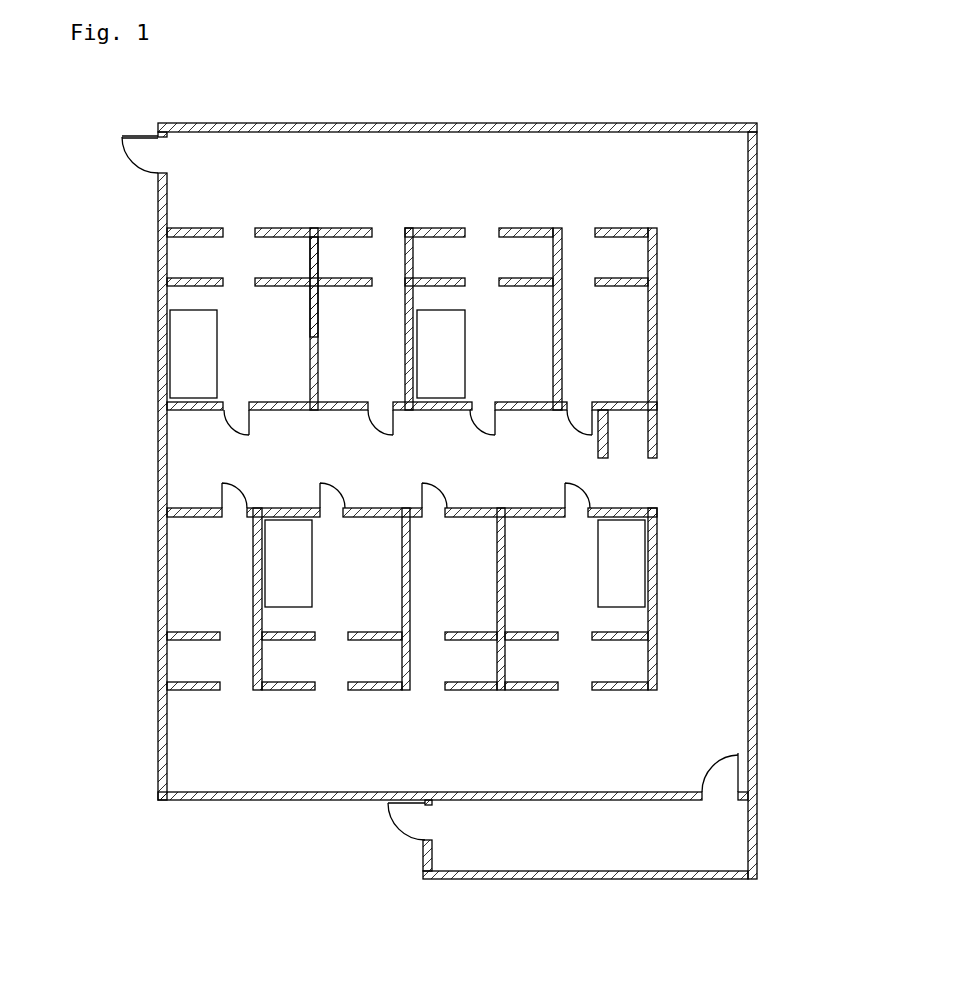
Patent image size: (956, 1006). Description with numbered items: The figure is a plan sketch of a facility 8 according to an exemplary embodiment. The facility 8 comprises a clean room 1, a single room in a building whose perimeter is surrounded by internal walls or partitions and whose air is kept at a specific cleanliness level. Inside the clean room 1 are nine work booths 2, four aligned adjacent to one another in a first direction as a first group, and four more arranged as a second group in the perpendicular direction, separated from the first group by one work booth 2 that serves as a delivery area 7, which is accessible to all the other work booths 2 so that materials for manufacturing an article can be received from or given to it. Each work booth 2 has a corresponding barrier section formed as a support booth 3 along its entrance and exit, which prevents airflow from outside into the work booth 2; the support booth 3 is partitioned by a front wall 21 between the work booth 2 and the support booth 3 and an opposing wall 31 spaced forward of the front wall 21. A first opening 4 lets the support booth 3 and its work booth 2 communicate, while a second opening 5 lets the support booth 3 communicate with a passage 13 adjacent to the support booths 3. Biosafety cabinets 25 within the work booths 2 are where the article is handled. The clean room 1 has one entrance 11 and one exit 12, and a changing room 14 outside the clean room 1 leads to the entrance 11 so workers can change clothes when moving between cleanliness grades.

The facility 8 is at (671, 107).
The clean room 1 is at (571, 156).
The passage 13 is at (705, 486).
The exit 12 is at (152, 155).
The entrance 11 is at (718, 796).
The changing room 14 is at (523, 835).
The delivery area 7 is at (183, 443).
The work booth 2 is at (282, 375).
The support booth 3 is at (290, 255).
The opposing wall 31 is at (272, 228).
The front wall 21 is at (272, 286).
The biosafety cabinet 25 is at (205, 367).
The first opening 4 is at (240, 283).
The second opening 5 is at (232, 238).